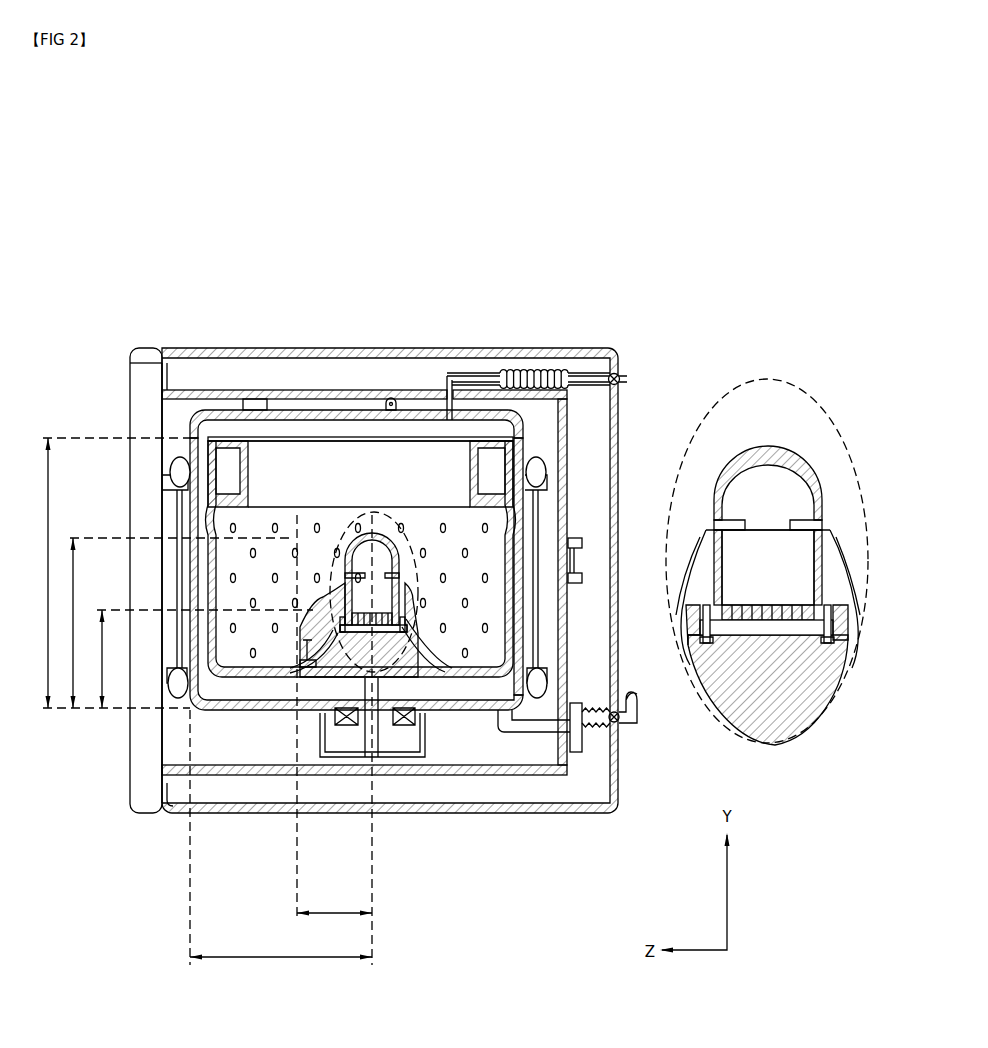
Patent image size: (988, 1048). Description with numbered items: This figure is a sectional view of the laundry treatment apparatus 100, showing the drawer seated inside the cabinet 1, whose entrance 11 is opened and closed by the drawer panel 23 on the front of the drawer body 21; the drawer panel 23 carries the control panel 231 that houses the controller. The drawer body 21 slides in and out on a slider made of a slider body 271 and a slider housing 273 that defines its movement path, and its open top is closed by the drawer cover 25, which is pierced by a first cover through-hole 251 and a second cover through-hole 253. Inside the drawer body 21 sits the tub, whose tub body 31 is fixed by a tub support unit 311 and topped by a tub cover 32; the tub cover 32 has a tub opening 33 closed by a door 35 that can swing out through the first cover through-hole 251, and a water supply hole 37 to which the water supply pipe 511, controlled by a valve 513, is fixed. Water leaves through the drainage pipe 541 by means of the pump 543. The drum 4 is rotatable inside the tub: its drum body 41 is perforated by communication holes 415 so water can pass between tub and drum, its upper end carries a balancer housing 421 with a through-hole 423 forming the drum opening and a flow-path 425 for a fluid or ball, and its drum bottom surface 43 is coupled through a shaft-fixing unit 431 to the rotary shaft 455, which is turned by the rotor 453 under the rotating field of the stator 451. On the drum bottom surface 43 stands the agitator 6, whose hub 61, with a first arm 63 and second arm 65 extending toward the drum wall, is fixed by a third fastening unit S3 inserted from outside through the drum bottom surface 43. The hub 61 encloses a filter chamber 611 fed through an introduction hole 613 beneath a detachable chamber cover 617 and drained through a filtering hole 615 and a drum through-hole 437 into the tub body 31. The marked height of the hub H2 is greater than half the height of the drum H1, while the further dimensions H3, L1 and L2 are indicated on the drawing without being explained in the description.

The laundry treatment apparatus 100 is at (142, 161).
The cabinet 1 is at (404, 352).
The entrance 11 is at (167, 386).
The drawer body 21 is at (172, 738).
The drawer panel 23 is at (162, 770).
The control panel 231 is at (148, 352).
The drawer cover 25 is at (222, 394).
The first cover through-hole 251 is at (257, 404).
The second cover through-hole 253 is at (462, 394).
The tub body 31 is at (508, 470).
The tub support unit 311 is at (566, 625).
The tub cover 32 is at (525, 440).
The tub opening 33 is at (286, 414).
The door 35 is at (390, 401).
The water supply hole 37 is at (449, 376).
The drum 4 is at (456, 640).
The drum body 41 is at (238, 668).
The communication holes 415 is at (490, 678).
The housing 421 is at (490, 466).
The through-hole 423 is at (440, 466).
The flow-path 425 is at (512, 470).
The drum bottom surface 43 is at (272, 676).
The shaft-fixing unit 431 is at (323, 680).
The drum through-hole 437 is at (768, 636).
The stator 451 is at (396, 733).
The rotor 453 is at (423, 745).
The rotary shaft 455 is at (366, 750).
The water supply pipe 511 is at (585, 372).
The valve 513 is at (621, 377).
The drainage pipe 541 is at (540, 733).
The pump 543 is at (578, 753).
The slider body 271 is at (576, 568).
The slider housing 273 is at (583, 546).
The agitator 6 is at (402, 542).
The hub 61 is at (820, 548).
The chamber 611 is at (766, 548).
The introduction hole 613 is at (737, 524).
The filtering hole 615 is at (834, 618).
The chamber cover 617 is at (783, 462).
The first arm 63 is at (676, 645).
The second arm 65 is at (840, 585).
The third fastening unit S3 is at (703, 645).
The height of the drum H1 is at (39, 573).
The height of the hub H2 is at (64, 623).
The height H3 is at (93, 659).
The length L1 is at (281, 948).
The length L2 is at (334, 903).